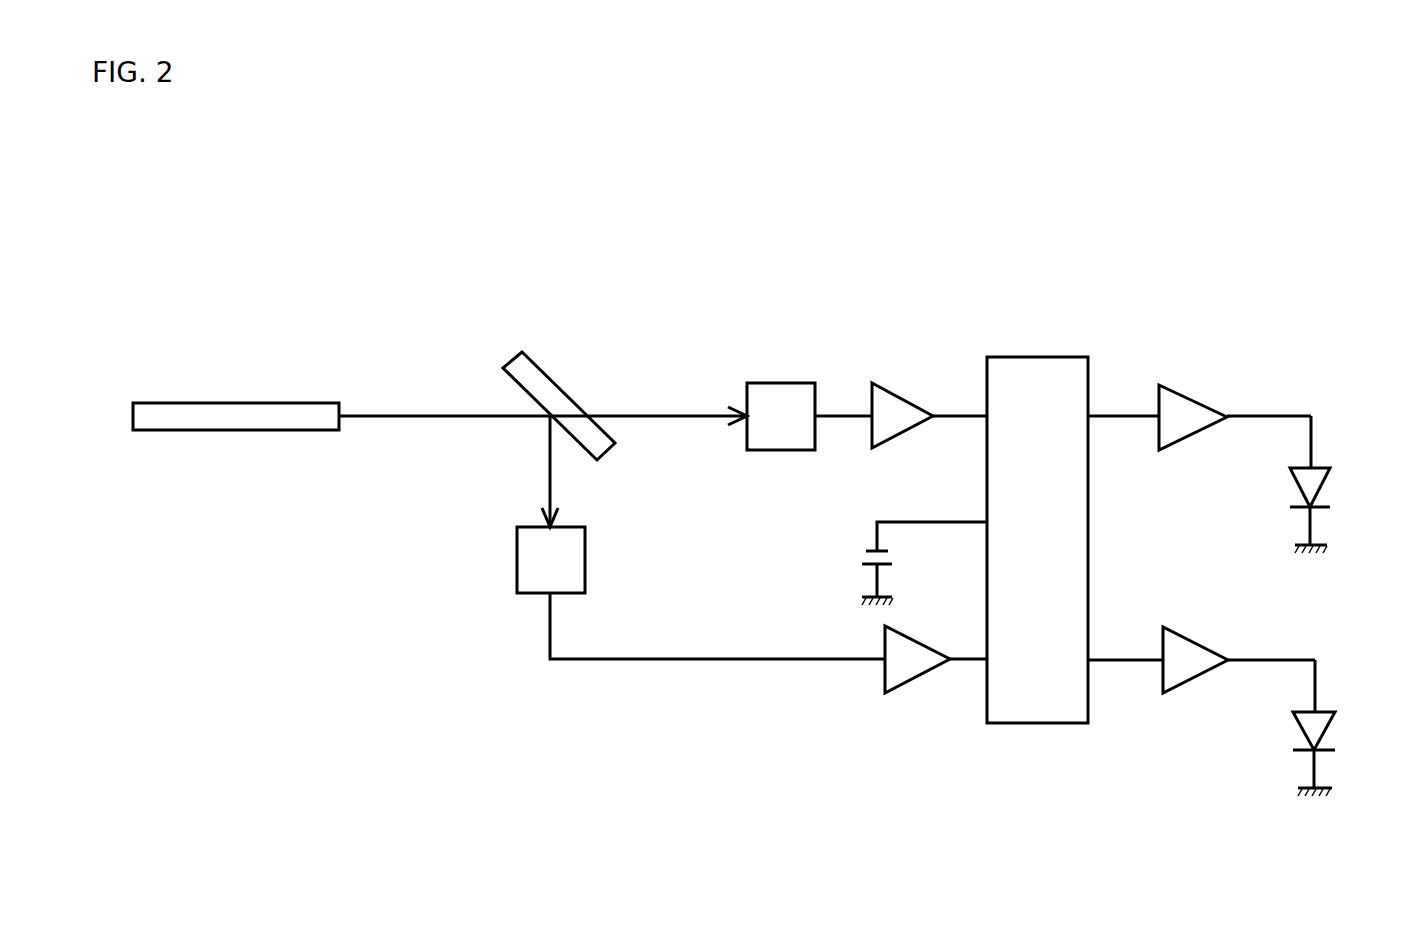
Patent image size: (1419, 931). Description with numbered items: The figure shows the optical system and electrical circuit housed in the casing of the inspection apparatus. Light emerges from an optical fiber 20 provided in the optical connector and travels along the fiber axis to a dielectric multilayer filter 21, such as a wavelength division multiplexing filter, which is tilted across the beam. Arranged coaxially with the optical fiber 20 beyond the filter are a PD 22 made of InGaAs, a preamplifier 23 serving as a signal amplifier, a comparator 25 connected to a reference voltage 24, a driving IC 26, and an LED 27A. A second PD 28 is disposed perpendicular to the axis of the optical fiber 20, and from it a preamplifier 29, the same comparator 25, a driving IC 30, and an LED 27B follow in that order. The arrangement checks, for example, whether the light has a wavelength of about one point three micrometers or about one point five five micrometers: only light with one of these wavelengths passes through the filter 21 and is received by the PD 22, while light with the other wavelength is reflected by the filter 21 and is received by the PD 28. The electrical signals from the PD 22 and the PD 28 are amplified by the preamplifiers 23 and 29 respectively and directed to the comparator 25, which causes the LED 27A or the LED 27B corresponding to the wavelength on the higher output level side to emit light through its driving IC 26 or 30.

The optical fiber 20 is at (176, 403).
The dielectric multilayer filter 21 is at (545, 372).
The PD 22 is at (778, 383).
The preamplifier 23 is at (900, 393).
The reference voltage 24 is at (865, 567).
The comparator 25 is at (1043, 357).
The driving IC 26 is at (1185, 395).
The LED 27A is at (1318, 467).
The LED 27B is at (1323, 710).
The PD 28 is at (515, 570).
The preamplifier 29 is at (885, 682).
The driving IC 30 is at (1162, 683).